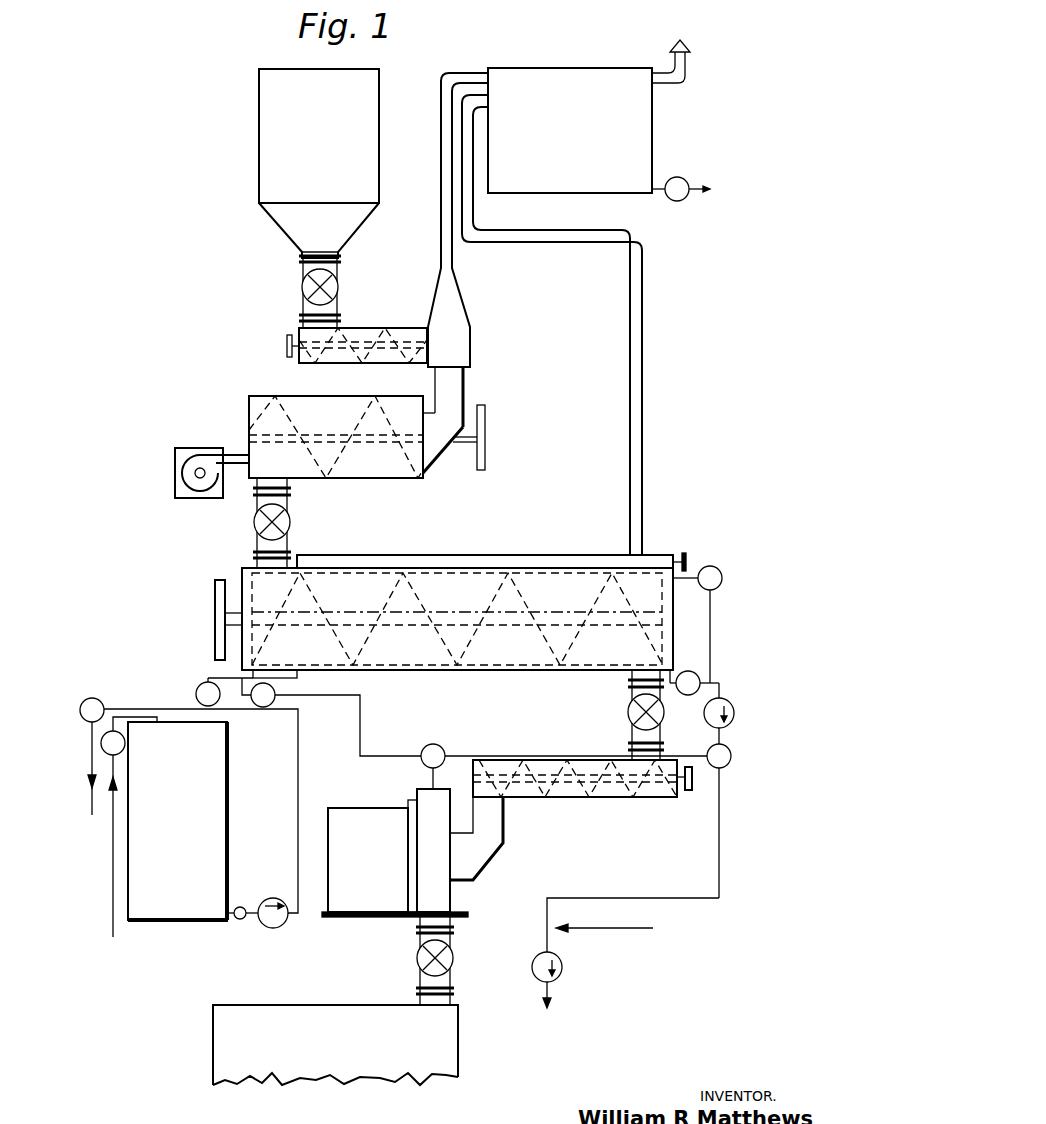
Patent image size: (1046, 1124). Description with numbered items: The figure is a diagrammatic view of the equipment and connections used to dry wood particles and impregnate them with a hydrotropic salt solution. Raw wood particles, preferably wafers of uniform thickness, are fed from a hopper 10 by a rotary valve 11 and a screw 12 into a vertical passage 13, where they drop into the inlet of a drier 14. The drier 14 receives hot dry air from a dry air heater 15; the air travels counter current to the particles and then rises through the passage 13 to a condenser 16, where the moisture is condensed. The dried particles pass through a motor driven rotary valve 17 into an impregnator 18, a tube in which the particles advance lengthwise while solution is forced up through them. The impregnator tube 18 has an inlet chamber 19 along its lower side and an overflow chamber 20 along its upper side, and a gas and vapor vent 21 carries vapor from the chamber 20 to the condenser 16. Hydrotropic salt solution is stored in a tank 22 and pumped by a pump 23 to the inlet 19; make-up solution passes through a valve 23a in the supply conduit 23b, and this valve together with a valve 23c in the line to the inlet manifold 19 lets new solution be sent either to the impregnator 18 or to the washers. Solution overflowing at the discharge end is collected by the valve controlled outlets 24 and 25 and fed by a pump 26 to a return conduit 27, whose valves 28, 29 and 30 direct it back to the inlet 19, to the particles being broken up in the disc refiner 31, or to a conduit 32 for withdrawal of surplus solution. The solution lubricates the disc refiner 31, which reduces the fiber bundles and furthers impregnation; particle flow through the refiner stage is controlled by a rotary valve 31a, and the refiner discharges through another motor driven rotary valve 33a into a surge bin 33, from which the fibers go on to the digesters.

The hopper 10 is at (268, 183).
The rotary valve 11 is at (305, 287).
The screw 12 is at (337, 358).
The vertical passage 13 is at (456, 387).
The drier 14 is at (422, 479).
The dry air heater 15 is at (175, 472).
The condenser 16 is at (526, 80).
The motor driven rotary valve 17 is at (292, 529).
The impregnator 18 is at (243, 575).
The inlet chamber 19 is at (450, 678).
The overflow chamber 20 is at (484, 548).
The gas and vapor vent 21 is at (630, 438).
The tank 22 is at (228, 762).
The pump 23 is at (274, 928).
The valve 23a is at (105, 683).
The supply conduit 23b is at (92, 757).
The valve 23c is at (212, 675).
The valve controlled outlet 24 is at (686, 582).
The valve controlled outlet 25 is at (705, 677).
The pump 26 is at (736, 717).
The return conduit 27 is at (472, 757).
The valve 28 is at (276, 695).
The valve 29 is at (428, 746).
The valve 30 is at (732, 758).
The disc refiner 31 is at (368, 808).
The rotary valve 31a is at (630, 712).
The conduit 32 is at (719, 860).
The surge bin 33 is at (307, 1013).
The motor driven rotary valve 33a is at (418, 959).